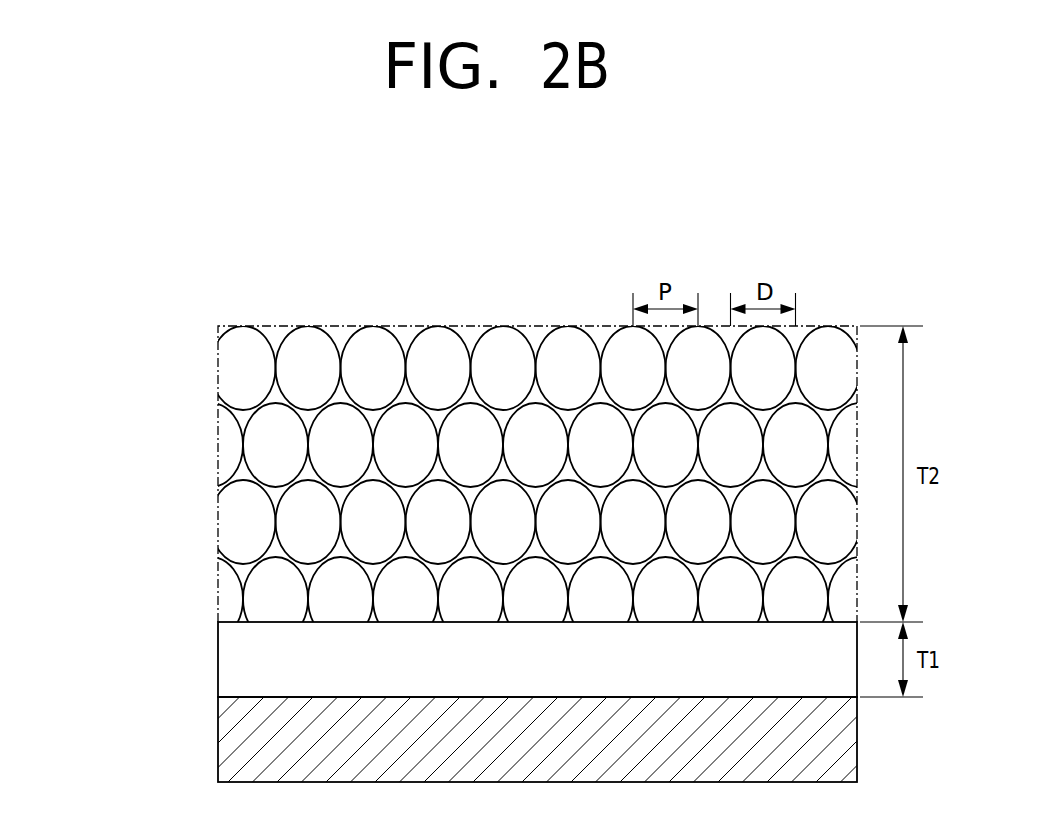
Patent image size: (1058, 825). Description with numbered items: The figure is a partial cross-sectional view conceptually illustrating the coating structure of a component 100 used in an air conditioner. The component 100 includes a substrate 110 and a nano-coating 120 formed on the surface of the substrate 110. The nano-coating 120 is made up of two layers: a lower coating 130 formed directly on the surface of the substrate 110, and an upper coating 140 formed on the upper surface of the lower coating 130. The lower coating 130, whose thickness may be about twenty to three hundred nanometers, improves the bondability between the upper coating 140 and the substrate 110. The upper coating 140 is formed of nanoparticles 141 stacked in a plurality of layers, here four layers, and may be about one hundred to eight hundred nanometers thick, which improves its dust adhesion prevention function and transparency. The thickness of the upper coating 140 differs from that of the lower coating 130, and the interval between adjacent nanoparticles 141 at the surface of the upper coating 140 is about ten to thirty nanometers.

The component 100 is at (404, 263).
The substrate 110 is at (849, 735).
The nano-coating 120 is at (128, 535).
The lower coating 130 is at (240, 640).
The upper coating 140 is at (211, 523).
The nanoparticles 141 is at (567, 333).